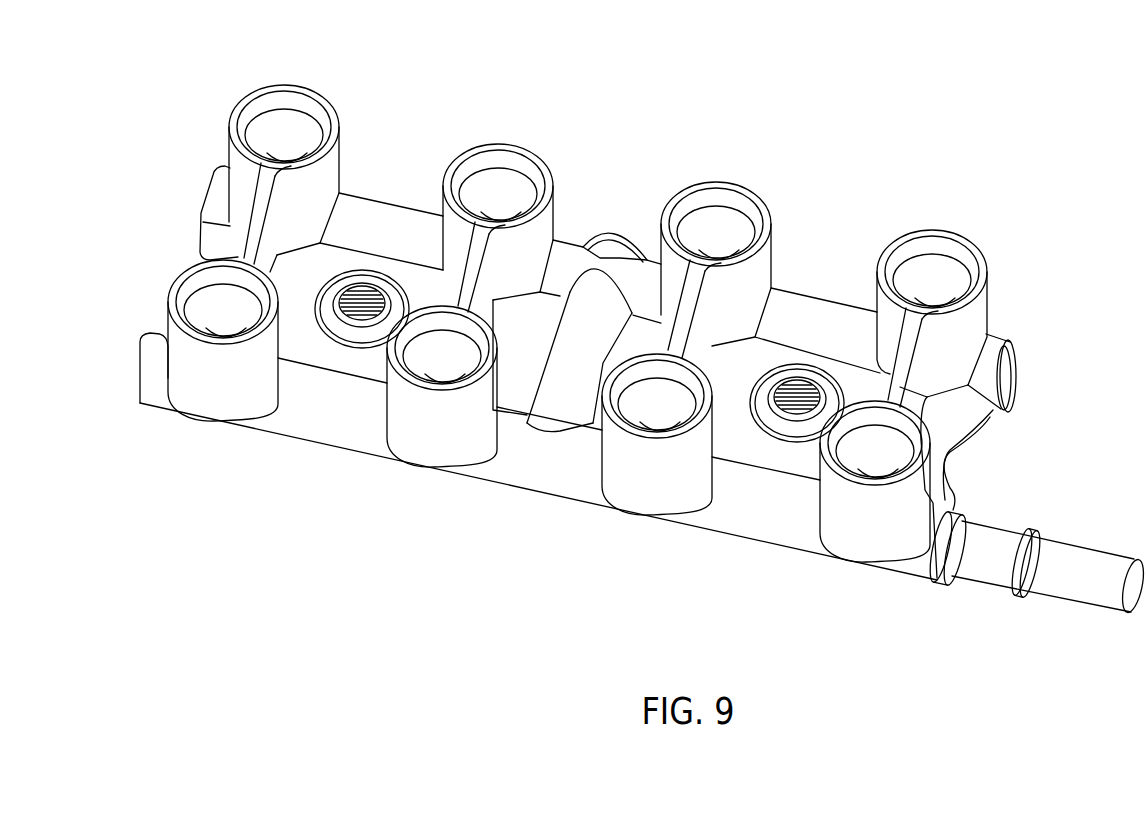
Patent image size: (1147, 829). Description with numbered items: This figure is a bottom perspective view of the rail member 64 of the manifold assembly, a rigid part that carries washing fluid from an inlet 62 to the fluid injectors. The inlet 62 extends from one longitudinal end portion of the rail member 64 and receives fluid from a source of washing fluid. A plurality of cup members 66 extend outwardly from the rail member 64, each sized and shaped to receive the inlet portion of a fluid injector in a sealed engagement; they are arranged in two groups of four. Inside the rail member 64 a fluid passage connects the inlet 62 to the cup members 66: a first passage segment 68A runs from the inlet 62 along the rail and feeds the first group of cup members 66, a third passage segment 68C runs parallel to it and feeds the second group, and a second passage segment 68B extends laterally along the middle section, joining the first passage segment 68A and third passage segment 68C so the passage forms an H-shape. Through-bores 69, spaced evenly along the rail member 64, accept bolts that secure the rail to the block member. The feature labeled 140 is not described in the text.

The inlet 62 is at (1086, 557).
The rail member 64 is at (1022, 92).
The cup member 66 is at (286, 92).
The first passage segment 68A is at (267, 415).
The second passage segment 68B is at (560, 402).
The third passage segment 68C is at (825, 308).
The through-bore 69 is at (362, 322).
The dome 140 is at (611, 187).